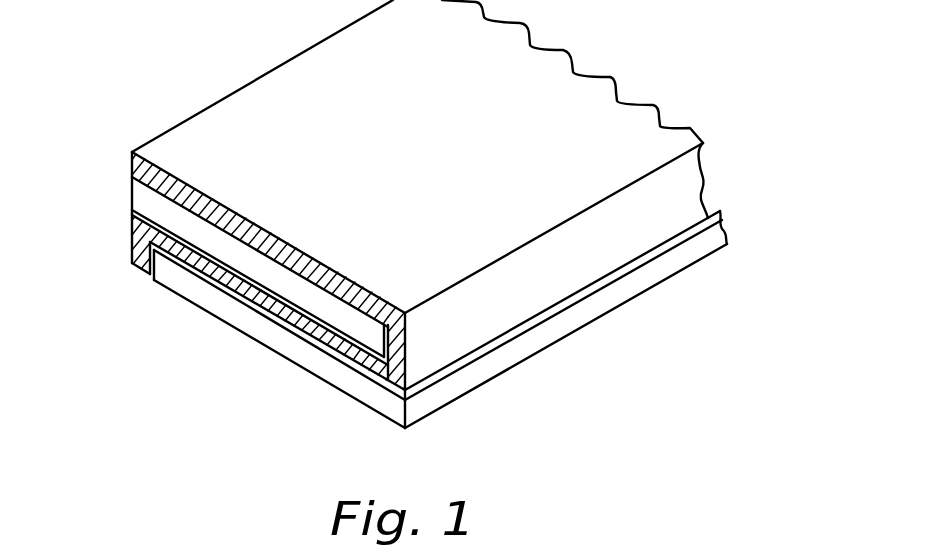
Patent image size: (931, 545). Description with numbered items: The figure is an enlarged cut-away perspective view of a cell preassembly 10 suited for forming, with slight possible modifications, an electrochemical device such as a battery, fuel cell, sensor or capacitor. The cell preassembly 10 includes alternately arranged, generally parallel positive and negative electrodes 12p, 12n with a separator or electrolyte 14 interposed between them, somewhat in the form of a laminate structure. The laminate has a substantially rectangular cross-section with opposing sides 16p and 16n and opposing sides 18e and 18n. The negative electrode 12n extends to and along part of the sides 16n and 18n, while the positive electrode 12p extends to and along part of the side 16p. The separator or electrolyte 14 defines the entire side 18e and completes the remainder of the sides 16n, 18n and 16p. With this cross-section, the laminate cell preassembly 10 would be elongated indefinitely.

The cell preassembly 10 is at (190, 82).
The positive electrode 12p is at (205, 233).
The negative electrode 12n is at (543, 337).
The separator or electrolyte 14 is at (405, 353).
The side 16p is at (122, 259).
The side 16n is at (715, 138).
The side 18e is at (415, 184).
The side 18n is at (388, 437).